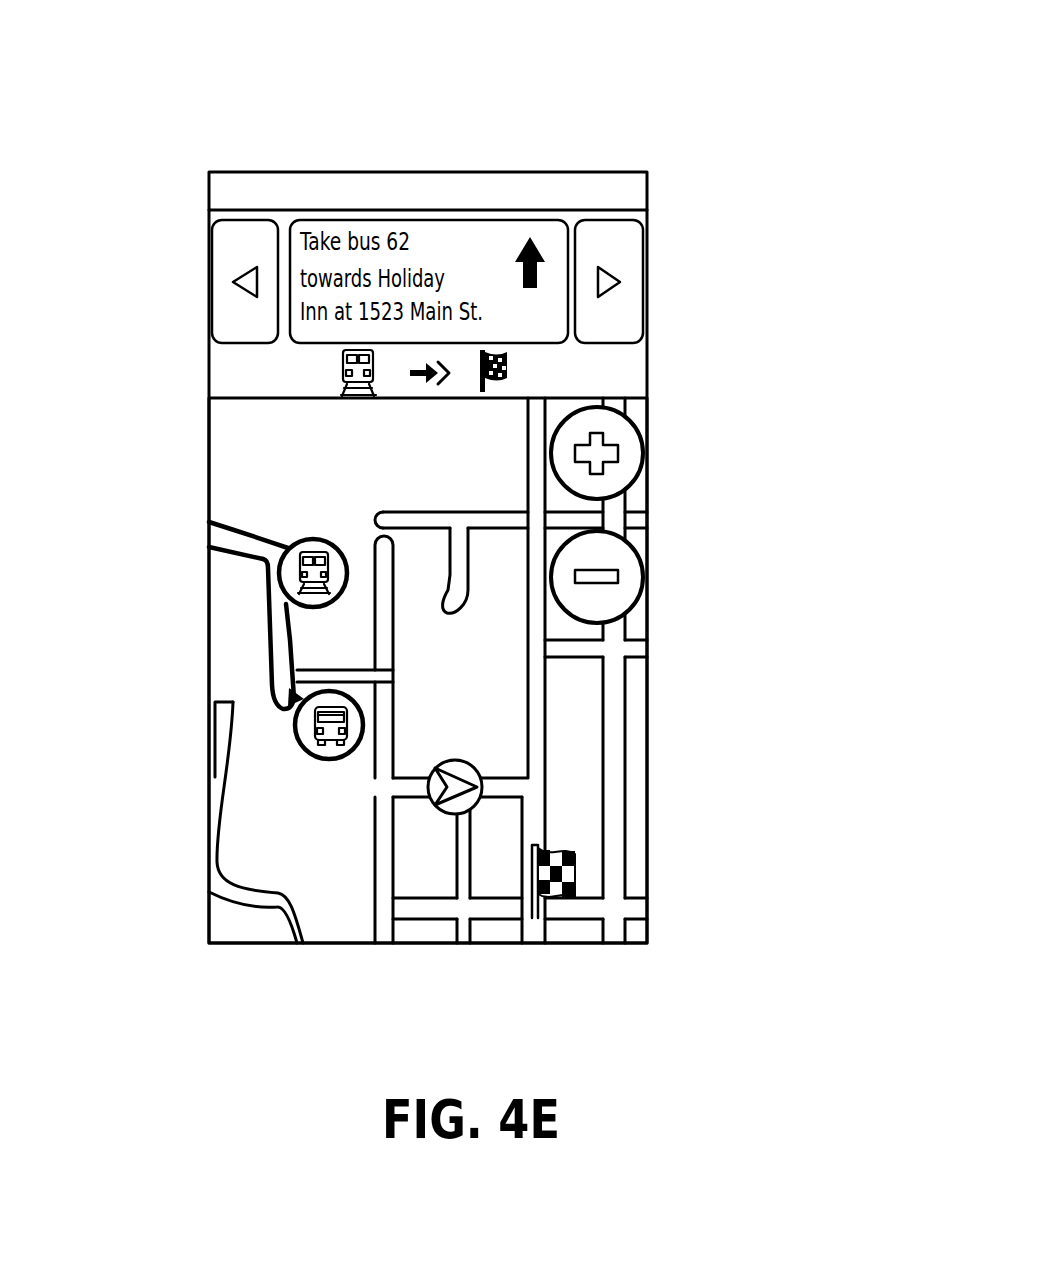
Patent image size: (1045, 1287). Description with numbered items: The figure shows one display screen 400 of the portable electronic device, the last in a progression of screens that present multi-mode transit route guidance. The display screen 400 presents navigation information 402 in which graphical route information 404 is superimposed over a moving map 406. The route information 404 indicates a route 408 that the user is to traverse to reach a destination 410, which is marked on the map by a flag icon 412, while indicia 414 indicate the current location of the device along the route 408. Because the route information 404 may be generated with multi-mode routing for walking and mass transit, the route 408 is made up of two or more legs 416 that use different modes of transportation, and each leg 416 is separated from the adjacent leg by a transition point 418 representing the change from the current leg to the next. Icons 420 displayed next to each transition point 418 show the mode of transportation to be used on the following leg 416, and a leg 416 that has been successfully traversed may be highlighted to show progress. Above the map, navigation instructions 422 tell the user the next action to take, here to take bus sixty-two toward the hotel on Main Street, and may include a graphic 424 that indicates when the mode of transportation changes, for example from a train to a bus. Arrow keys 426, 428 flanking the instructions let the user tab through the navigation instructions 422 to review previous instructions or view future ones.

The display screen 400 is at (686, 100).
The navigation information 402 is at (200, 396).
The route information 404 is at (275, 655).
The moving map 406 is at (209, 750).
The route 408 is at (273, 592).
The destination 410 is at (538, 943).
The flag icon 412 is at (575, 880).
The indicia 414 is at (483, 782).
The leg 416 is at (547, 816).
The transition point 418 is at (292, 890).
The icon 420 is at (365, 710).
The navigation instructions 422 is at (521, 232).
The graphic 424 is at (510, 370).
The arrow key 426 is at (247, 237).
The arrow key 428 is at (630, 248).